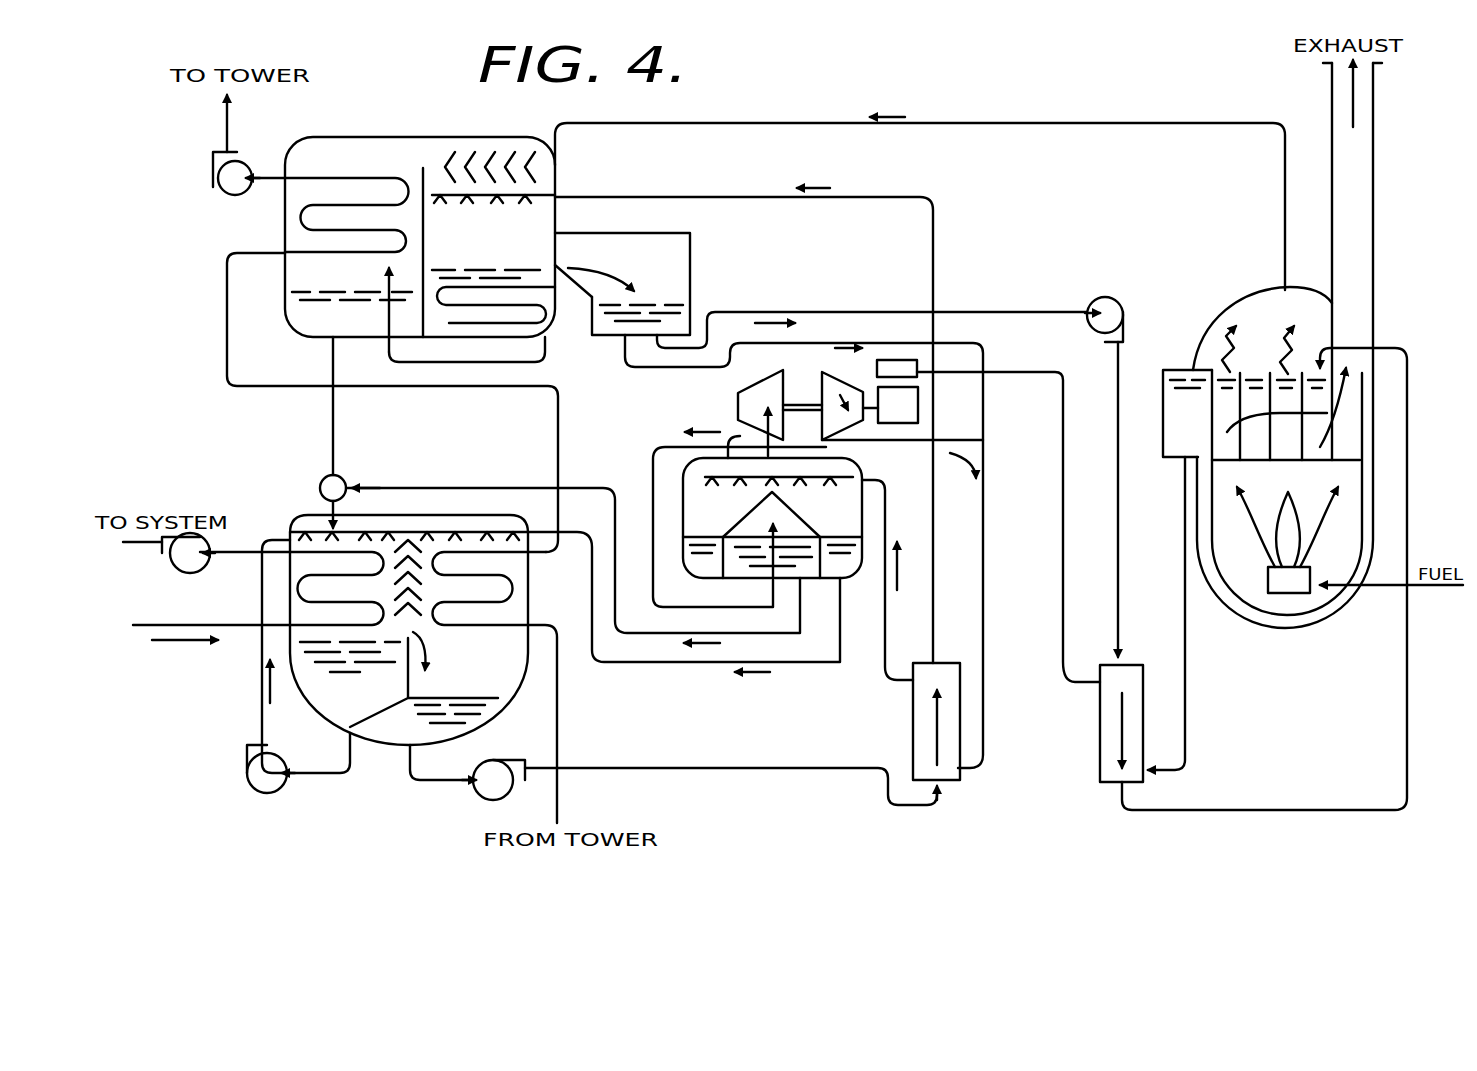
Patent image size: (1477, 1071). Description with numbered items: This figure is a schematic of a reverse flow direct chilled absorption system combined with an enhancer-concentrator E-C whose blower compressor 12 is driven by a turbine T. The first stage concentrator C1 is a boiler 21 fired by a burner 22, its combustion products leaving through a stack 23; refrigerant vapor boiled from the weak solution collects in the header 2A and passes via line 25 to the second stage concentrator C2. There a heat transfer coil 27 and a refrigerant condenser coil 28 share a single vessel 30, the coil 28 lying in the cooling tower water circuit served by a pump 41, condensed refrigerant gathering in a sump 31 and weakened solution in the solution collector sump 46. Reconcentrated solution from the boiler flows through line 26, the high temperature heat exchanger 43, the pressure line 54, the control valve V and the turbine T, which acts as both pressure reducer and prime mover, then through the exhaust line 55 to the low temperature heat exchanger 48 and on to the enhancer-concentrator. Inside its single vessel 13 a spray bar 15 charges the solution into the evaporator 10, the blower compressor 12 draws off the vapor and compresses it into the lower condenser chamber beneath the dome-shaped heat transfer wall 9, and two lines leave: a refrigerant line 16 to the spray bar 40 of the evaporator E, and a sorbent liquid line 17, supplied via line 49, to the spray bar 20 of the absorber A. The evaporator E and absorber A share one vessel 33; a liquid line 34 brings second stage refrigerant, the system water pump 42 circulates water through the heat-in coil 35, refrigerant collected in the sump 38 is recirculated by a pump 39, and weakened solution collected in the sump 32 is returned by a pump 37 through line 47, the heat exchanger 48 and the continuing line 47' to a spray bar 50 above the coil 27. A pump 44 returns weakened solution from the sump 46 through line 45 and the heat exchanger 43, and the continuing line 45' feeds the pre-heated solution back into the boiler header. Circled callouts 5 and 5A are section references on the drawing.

The vessel 30 is at (360, 135).
The second stage concentrator C2 is at (481, 137).
The heat transfer coil 27 is at (546, 316).
The sump 31 is at (303, 322).
The spray bar 50 is at (540, 181).
The pump 41 is at (222, 187).
The refrigerant condenser coil 28 is at (300, 215).
The line 25 is at (1126, 125).
The continuing line 47' is at (785, 425).
The solution collector sump 46 is at (683, 318).
The line 45 is at (872, 313).
The turbine T is at (840, 368).
The control valve V is at (902, 356).
The blower compressor 12 is at (748, 385).
The vessel 13 is at (728, 432).
The enhancer-concentrator E-C is at (674, 473).
The spray bar 15 is at (848, 478).
The separator baffle 9 is at (797, 518).
The section reference 5 is at (902, 475).
The section reference 5A is at (585, 517).
The evaporator 10 is at (870, 528).
The line 49 is at (885, 676).
The low temperature heat exchanger 48 is at (918, 733).
The line 47 is at (731, 787).
The exhaust line 55 is at (985, 567).
The pressure line 54 is at (1063, 610).
The spray bar 40 is at (322, 537).
The absorber A is at (522, 668).
The spray bar 20 is at (520, 509).
The heat-in coil 35 is at (300, 588).
The pump 42 is at (188, 573).
The sorbent liquid line 17 is at (592, 587).
The refrigerant line 16 is at (473, 488).
The evaporator E is at (308, 510).
The liquid line 34 is at (334, 442).
The vessel 33 is at (484, 717).
The sump 38 is at (332, 698).
The pump 39 is at (259, 790).
The sump 32 is at (387, 733).
The pump 37 is at (481, 795).
The pump 44 is at (1125, 306).
The high temperature heat exchanger 43 is at (1105, 757).
The line 26 is at (1188, 692).
The continuing line 45' is at (1264, 598).
The first stage concentrator C1 is at (1265, 282).
The boiler tubes 2A is at (1250, 311).
The stack 23 is at (1378, 228).
The boiler 21 is at (1390, 520).
The burner 22 is at (1285, 591).